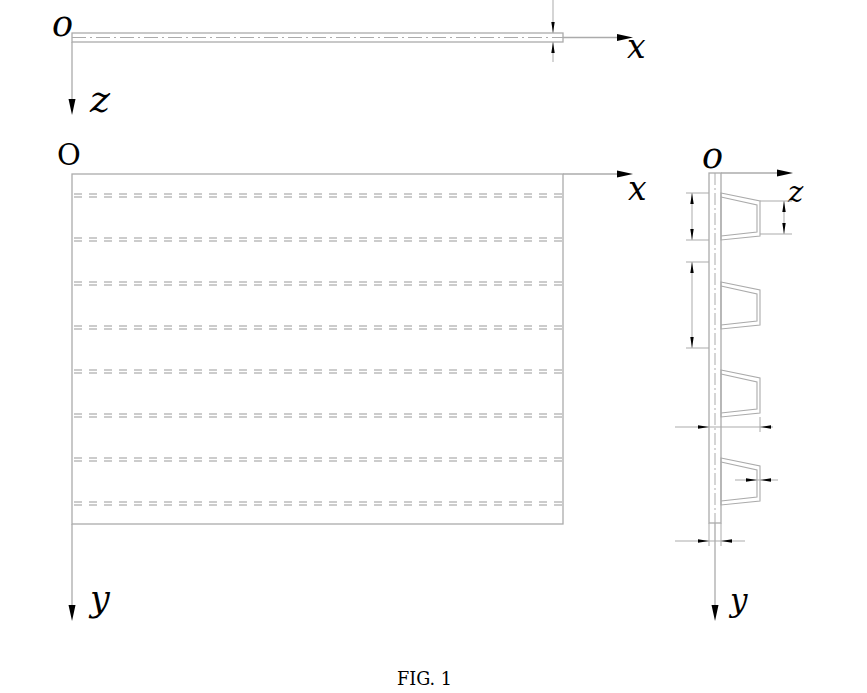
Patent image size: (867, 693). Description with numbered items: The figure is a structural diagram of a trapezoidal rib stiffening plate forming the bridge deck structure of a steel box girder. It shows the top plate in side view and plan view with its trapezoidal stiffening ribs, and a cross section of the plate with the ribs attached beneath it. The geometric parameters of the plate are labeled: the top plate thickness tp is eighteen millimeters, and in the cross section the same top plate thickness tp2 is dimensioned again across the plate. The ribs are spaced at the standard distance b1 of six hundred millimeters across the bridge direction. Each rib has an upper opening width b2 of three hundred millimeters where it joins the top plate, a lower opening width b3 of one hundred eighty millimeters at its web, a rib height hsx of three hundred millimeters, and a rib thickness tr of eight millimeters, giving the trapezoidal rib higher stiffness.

The top plate thickness tp is at (537, 31).
The plate thickness (section view) tp2 is at (710, 528).
The standard rib distance b1 is at (685, 305).
The upper opening width b2 is at (686, 216).
The lower opening width b3 is at (776, 217).
The rib height hsx is at (720, 411).
The rib thickness tr is at (764, 464).